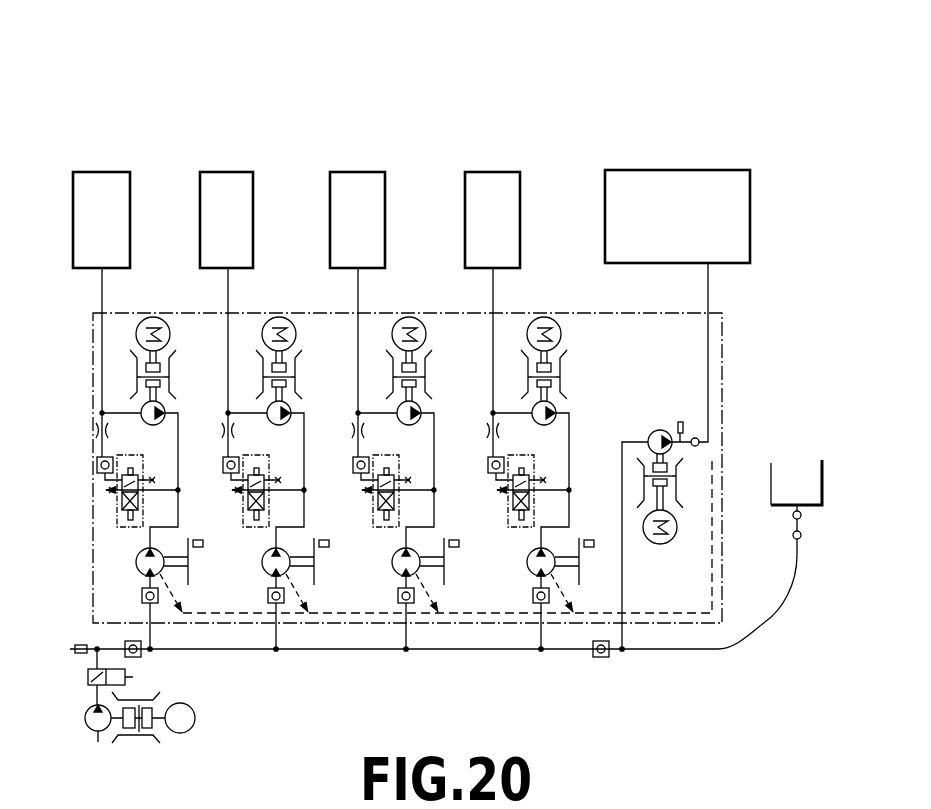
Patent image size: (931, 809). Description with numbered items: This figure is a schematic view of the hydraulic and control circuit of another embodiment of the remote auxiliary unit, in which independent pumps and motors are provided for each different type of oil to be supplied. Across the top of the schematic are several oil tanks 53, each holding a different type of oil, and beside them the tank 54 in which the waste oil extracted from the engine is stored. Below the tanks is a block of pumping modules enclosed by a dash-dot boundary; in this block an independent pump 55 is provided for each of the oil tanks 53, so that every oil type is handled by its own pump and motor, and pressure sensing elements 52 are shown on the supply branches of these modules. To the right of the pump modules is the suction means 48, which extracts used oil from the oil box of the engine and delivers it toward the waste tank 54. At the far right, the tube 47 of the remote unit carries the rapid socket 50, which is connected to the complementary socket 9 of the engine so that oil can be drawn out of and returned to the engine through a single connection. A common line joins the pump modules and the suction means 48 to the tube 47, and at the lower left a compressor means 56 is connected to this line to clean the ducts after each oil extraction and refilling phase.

The oil tanks 53 is at (132, 183).
The tank 54 is at (665, 183).
The independent pump 55 is at (250, 313).
The pressure sensors 52 is at (205, 462).
The suction means 48 is at (658, 427).
The rapid socket 9 is at (790, 465).
The rapid socket 50 is at (800, 555).
The tube 47 is at (780, 610).
The compressor means 56 is at (207, 720).